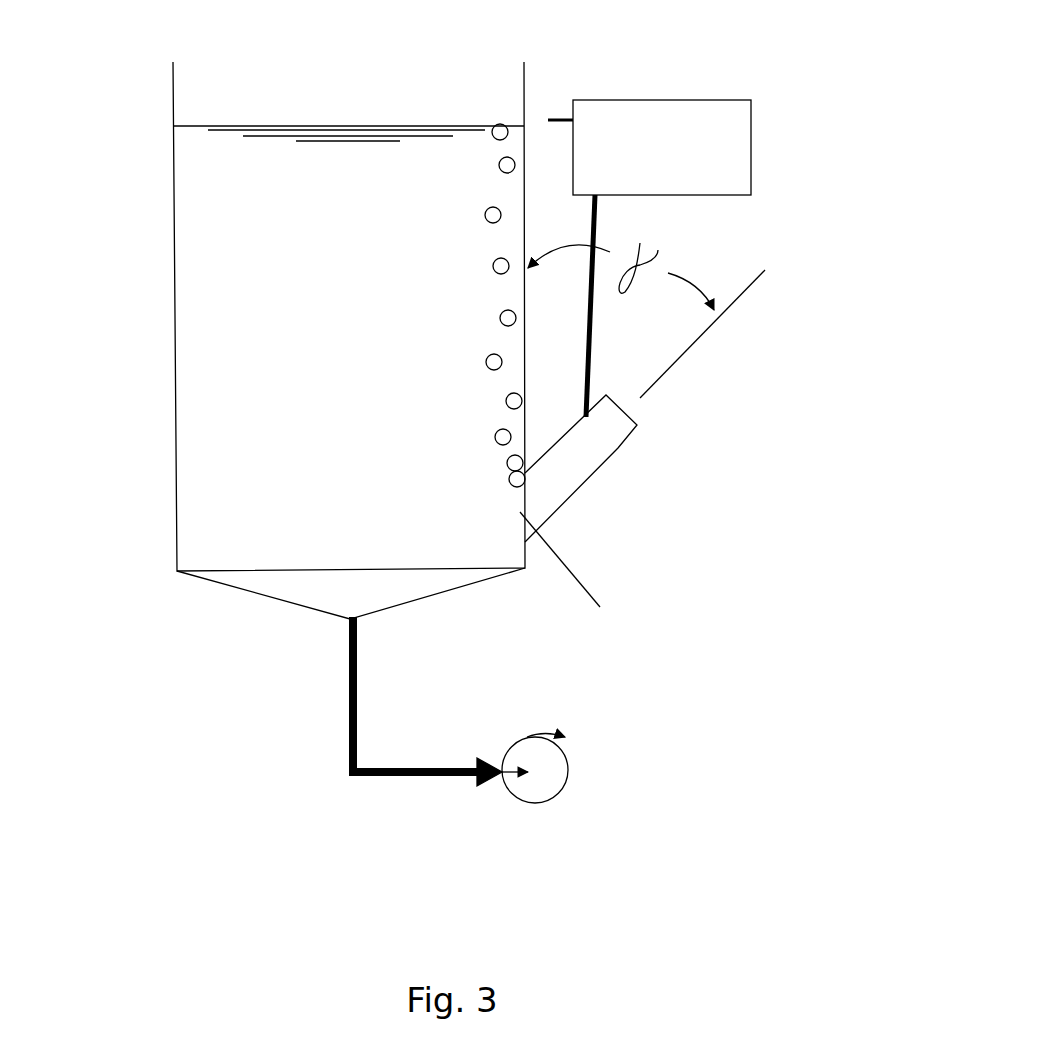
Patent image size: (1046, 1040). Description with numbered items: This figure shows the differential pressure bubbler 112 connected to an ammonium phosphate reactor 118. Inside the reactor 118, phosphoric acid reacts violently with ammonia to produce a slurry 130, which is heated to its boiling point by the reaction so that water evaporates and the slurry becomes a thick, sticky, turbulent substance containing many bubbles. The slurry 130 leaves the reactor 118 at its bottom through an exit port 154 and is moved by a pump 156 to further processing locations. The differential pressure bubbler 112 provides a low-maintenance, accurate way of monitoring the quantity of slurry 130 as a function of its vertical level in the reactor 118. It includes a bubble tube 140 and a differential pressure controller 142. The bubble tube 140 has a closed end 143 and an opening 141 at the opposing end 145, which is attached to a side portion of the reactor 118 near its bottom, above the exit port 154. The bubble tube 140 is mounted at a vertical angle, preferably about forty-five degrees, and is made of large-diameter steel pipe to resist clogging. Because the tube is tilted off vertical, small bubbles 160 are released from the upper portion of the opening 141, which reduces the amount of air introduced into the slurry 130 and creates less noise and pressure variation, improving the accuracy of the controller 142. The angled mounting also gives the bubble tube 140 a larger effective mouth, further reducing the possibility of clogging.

The differential pressure bubbler 112 is at (620, 534).
The reactor 118 is at (173, 233).
The slurry 130 is at (288, 178).
The bubble tube 140 is at (617, 448).
The opening 141 is at (504, 522).
The differential pressure controller 142 is at (752, 143).
The closed end 143 is at (637, 418).
The opposing end 145 is at (600, 607).
The exit port 154 is at (343, 617).
The pump 156 is at (535, 805).
The small bubbles 160 is at (508, 165).